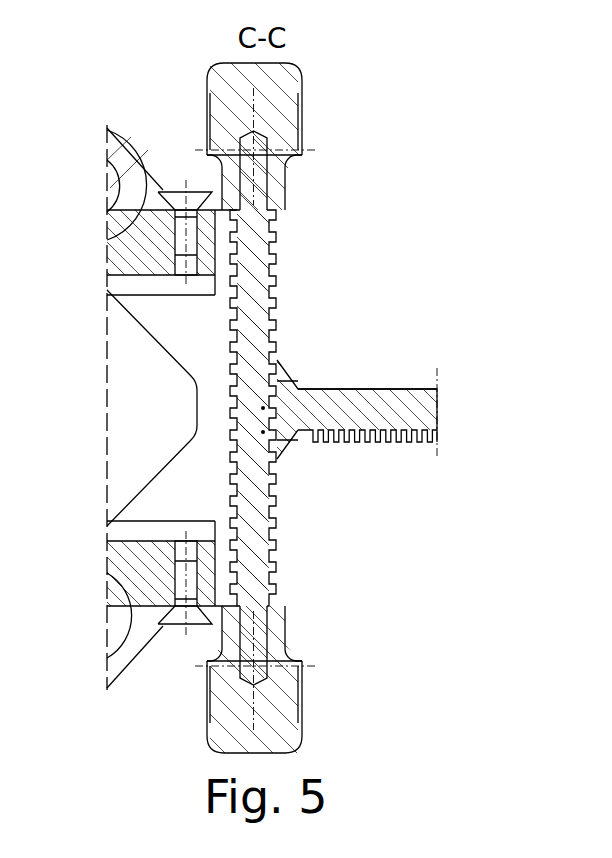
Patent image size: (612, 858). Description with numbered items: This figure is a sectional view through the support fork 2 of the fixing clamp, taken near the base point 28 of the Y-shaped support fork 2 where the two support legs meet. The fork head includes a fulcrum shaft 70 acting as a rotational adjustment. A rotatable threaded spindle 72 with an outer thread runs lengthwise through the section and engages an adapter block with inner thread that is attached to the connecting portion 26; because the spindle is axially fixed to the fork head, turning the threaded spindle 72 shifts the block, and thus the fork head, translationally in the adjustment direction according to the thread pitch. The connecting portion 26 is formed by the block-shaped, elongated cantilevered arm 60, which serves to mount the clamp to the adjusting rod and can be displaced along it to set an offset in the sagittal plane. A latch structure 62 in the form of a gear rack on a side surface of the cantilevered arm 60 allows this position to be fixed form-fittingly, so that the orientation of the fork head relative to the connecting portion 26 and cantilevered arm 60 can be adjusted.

The support fork 2 is at (197, 414).
The base point 28 is at (208, 395).
The fulcrum shaft 70 is at (311, 127).
The threaded spindle 72 is at (258, 272).
The connecting portion 26 is at (390, 386).
The cantilevered arm 60 is at (427, 400).
The latch structure 62 is at (410, 442).